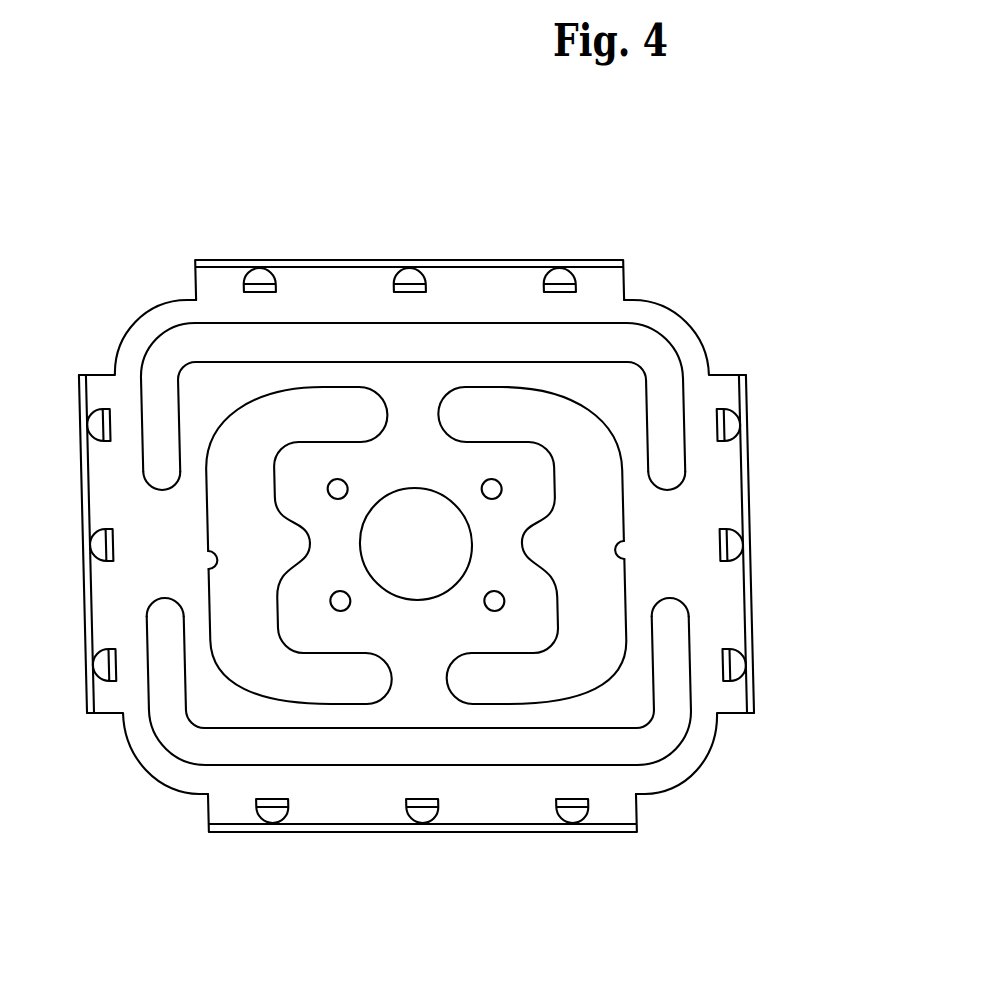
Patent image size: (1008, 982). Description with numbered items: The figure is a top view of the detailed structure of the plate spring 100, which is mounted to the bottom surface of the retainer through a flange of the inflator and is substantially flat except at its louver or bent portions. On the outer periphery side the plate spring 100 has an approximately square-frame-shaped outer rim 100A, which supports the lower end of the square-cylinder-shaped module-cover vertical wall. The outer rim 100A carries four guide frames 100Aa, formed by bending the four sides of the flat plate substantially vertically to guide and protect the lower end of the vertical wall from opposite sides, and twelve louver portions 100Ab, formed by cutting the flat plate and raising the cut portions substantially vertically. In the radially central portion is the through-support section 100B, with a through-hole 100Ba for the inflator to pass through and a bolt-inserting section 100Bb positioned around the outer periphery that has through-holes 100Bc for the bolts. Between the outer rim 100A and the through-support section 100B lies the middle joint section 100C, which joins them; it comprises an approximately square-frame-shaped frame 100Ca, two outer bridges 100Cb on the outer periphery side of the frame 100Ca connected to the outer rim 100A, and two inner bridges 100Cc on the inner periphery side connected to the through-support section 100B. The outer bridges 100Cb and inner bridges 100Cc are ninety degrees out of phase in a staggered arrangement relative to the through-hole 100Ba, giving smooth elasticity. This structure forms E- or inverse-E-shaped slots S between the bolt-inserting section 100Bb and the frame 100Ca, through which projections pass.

The plate spring 100 is at (641, 233).
The outer rim 100A is at (730, 454).
The guide frames 100Aa is at (745, 493).
The louver portions 100Ab is at (713, 533).
The through-support section 100B is at (545, 887).
The through-hole 100Ba is at (372, 574).
The bolt-inserting section 100Bb is at (518, 627).
The through-holes 100Bc is at (490, 480).
The middle joint section 100C is at (393, 195).
The frame 100Ca is at (220, 382).
The outer bridges 100Cb is at (163, 522).
The inner bridges 100Cc is at (410, 400).
The slots S is at (207, 560).